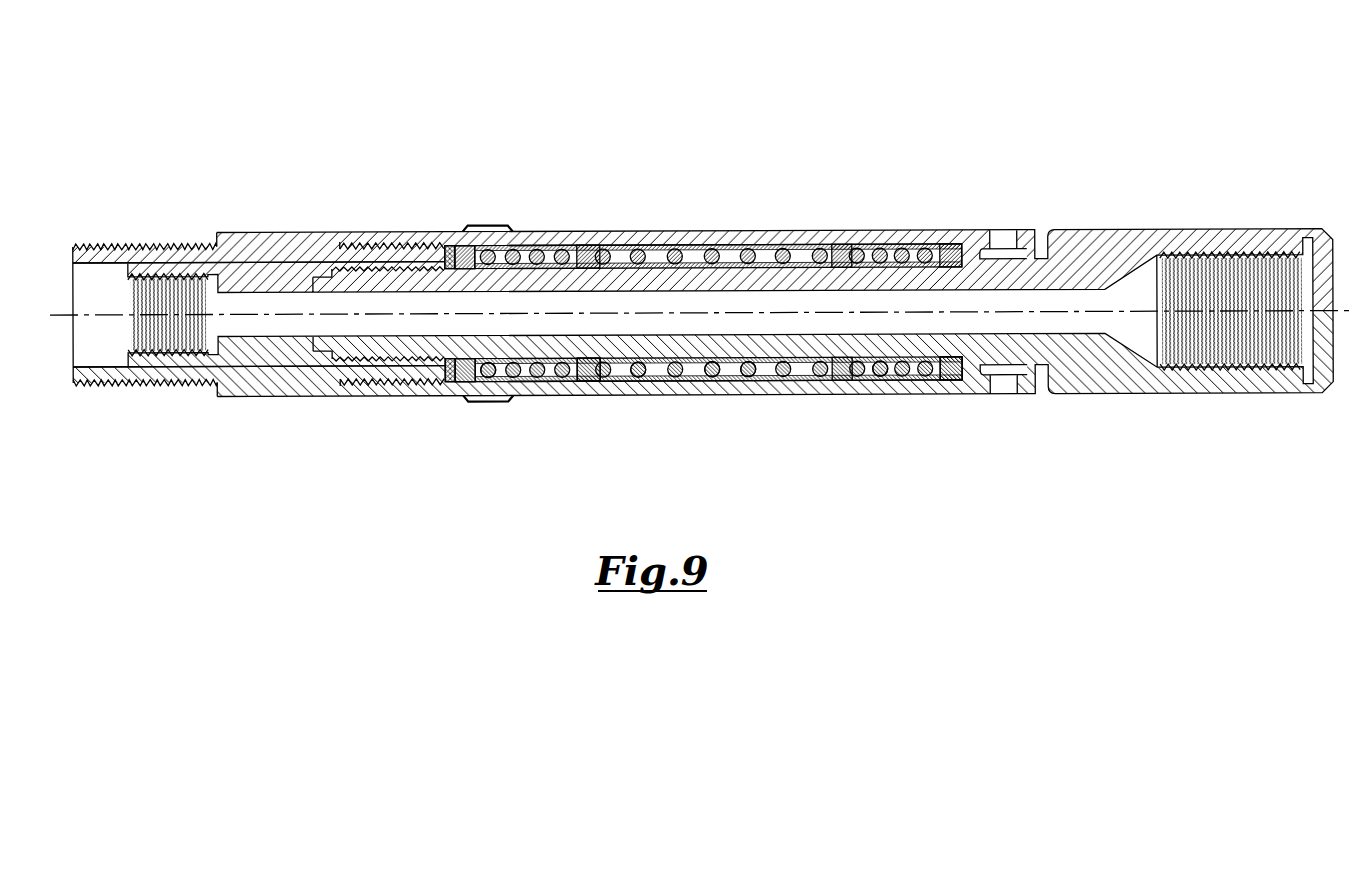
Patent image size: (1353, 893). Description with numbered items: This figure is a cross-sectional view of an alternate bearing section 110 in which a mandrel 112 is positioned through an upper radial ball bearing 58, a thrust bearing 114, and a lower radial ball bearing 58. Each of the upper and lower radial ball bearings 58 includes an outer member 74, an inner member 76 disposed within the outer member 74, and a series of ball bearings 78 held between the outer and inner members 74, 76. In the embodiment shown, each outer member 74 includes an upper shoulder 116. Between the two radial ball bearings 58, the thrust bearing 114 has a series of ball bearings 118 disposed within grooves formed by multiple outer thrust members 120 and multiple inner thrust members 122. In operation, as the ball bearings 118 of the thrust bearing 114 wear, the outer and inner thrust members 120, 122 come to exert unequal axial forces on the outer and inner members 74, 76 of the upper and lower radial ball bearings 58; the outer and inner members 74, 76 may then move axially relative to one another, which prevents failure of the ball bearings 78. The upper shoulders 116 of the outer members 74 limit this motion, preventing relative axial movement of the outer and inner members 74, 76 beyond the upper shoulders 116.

The alternate bearing section 110 is at (709, 126).
The mandrel 112 is at (368, 263).
The thrust bearing 114 is at (676, 243).
The upper shoulder 116 is at (473, 247).
The radial ball bearing 58 is at (528, 248).
The outer member 74 is at (538, 381).
The inner member 76 is at (473, 384).
The ball bearings 78 is at (495, 379).
The ball bearings 118 is at (707, 370).
The outer thrust members 120 is at (742, 366).
The inner thrust members 122 is at (627, 366).